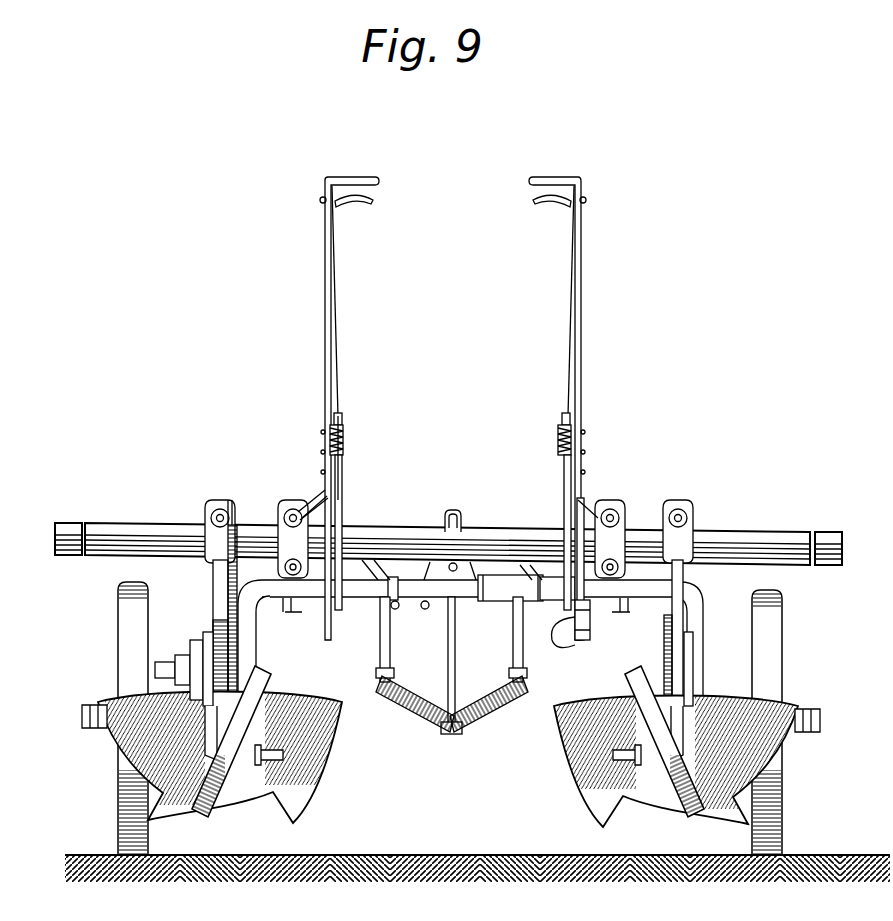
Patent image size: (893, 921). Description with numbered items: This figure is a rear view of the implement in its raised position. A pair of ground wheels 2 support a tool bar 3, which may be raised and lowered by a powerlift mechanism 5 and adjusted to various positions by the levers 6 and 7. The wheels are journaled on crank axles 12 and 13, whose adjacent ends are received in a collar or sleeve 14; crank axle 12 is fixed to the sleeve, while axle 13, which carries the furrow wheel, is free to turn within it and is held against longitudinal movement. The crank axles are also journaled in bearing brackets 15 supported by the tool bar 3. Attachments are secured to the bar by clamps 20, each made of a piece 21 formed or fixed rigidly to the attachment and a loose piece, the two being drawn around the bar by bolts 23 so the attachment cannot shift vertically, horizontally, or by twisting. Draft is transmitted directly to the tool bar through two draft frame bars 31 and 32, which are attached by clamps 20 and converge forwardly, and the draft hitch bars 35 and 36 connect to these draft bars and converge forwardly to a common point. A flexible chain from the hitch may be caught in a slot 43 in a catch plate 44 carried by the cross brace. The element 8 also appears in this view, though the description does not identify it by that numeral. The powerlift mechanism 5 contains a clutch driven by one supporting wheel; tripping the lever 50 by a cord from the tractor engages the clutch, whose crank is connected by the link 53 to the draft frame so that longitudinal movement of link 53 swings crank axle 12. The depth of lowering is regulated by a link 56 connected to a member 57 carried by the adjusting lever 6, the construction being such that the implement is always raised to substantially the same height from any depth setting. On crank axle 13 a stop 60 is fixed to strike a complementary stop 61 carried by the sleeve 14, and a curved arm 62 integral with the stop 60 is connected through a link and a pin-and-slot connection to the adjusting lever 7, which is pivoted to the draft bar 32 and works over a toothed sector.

The ground wheels 2 is at (120, 637).
The tool bar 3 is at (372, 535).
The powerlift mechanism 5 is at (197, 645).
The lever 6 is at (325, 342).
The lever 7 is at (581, 340).
The disc 8 is at (262, 800).
The crank axle 12 is at (362, 599).
The crank axle 13 is at (702, 621).
The collar or sleeve 14 is at (500, 603).
The bearing brackets 15 is at (284, 612).
The clamps 20 is at (233, 527).
The clamp piece 21 is at (278, 549).
The bolts 23 is at (305, 520).
The draft frame bar 31 is at (379, 643).
The draft frame bar 32 is at (514, 641).
The hitch bar 35 is at (418, 700).
The hitch bar 36 is at (488, 700).
The slot 43 is at (452, 515).
The catch plate 44 is at (462, 524).
The lever 50 is at (232, 496).
The link 53 is at (270, 688).
The link 56 is at (314, 495).
The member 57 is at (305, 520).
The stop 60 is at (586, 623).
The complementary stop 61 is at (563, 618).
The curved arm 62 is at (585, 505).